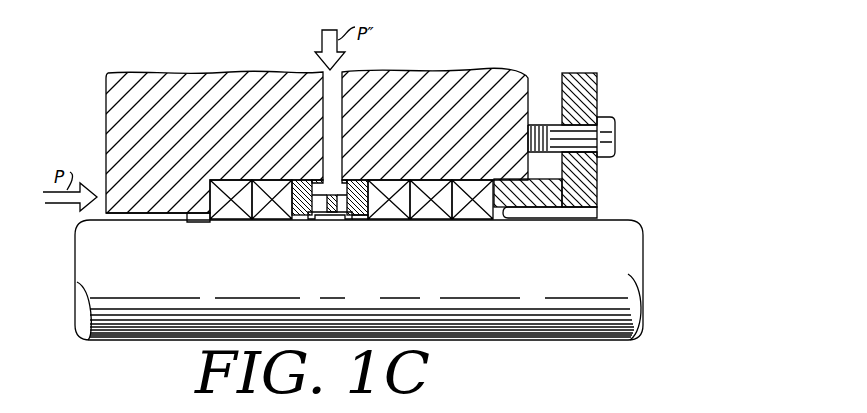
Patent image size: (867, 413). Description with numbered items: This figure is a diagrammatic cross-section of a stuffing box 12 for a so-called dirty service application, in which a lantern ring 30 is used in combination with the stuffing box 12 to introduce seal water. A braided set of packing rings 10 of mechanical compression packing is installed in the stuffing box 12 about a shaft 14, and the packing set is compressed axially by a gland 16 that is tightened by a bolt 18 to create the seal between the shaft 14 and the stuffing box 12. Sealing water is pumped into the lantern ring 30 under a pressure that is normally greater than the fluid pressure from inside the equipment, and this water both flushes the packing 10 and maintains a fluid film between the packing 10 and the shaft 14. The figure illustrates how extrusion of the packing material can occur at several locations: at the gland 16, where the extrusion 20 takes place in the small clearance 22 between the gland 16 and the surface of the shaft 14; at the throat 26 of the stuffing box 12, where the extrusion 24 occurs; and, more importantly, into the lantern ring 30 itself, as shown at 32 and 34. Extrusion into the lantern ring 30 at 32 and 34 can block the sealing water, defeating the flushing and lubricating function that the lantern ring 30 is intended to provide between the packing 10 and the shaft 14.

The packing rings 10 is at (233, 220).
The stuffing box 12 is at (470, 78).
The shaft 14 is at (372, 286).
The gland 16 is at (597, 100).
The bolt 18 is at (615, 138).
The extrusion 20 is at (505, 216).
The clearance 22 is at (568, 216).
The extrusion at throat 24 is at (198, 222).
The throat 26 is at (155, 220).
The lantern ring 30 is at (352, 220).
The extrusion into lantern ring 32 is at (318, 222).
The extrusion into lantern ring 34 is at (343, 222).